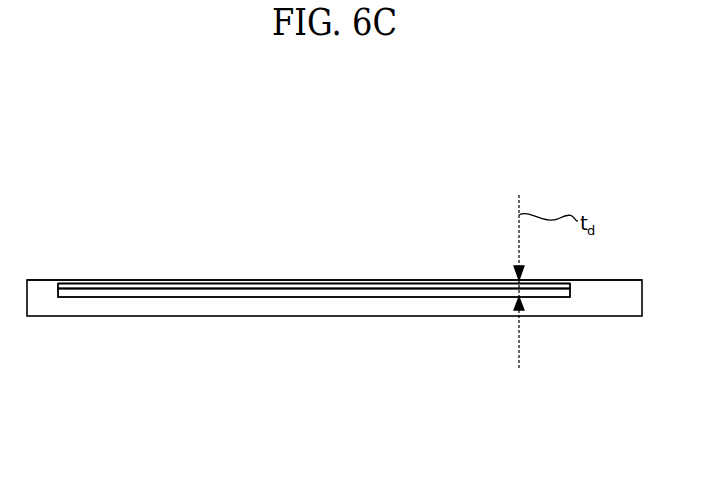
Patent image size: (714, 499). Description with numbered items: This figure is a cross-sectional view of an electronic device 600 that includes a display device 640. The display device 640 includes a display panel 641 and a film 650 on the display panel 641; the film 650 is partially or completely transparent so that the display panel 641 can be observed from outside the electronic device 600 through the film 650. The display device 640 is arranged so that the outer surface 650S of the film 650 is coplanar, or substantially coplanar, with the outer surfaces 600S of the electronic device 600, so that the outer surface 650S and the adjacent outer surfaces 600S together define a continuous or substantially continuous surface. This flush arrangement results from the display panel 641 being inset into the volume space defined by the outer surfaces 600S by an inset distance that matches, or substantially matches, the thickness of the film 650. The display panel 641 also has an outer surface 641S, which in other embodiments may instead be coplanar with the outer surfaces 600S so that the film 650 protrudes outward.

The electronic device 600 is at (66, 334).
The outer surfaces of the electronic device 600S is at (46, 280).
The display device 640 is at (177, 210).
The display panel 641 is at (104, 293).
The outer surface of the display panel 641S is at (353, 288).
The film 650 is at (168, 285).
The outer surface of the film 650S is at (280, 282).